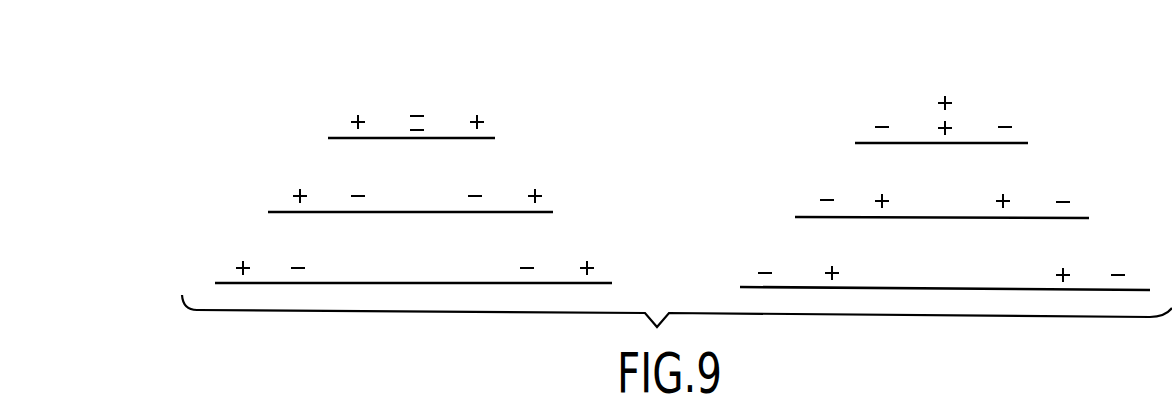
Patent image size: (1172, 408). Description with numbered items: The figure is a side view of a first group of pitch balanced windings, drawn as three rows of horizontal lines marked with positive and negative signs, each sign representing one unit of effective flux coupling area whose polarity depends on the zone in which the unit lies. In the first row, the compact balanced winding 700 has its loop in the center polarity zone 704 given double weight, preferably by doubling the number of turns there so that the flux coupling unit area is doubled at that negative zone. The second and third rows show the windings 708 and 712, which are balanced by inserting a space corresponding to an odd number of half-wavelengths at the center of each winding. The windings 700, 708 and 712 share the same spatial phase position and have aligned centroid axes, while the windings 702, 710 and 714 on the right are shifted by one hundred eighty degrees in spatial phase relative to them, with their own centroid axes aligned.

The balanced winding 700 is at (518, 132).
The winding 702 is at (871, 102).
The center polarity zone 704 is at (425, 95).
The winding 708 is at (292, 170).
The winding 710 is at (822, 177).
The winding 712 is at (230, 240).
The winding 714 is at (776, 247).